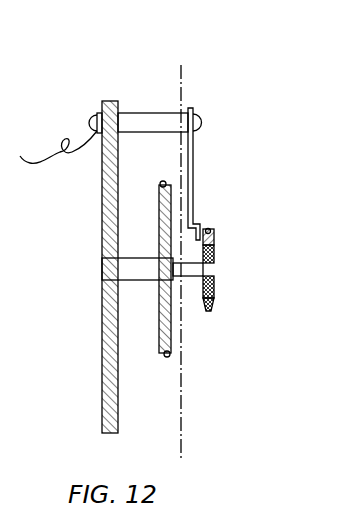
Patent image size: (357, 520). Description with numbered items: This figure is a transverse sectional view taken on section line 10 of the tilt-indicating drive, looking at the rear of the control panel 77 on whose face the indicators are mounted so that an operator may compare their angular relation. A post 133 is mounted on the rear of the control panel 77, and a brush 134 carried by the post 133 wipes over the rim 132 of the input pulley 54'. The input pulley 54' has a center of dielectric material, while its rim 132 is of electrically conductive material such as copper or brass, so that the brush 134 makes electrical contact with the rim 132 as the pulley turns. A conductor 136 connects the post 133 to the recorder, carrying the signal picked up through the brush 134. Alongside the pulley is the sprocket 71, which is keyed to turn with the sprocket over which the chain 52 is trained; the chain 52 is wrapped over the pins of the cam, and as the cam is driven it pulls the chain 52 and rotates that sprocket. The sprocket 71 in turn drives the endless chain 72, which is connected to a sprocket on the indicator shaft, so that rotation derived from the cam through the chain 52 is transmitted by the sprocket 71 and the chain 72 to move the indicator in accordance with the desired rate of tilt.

The section line 10 is at (181, 68).
The control panel 77 is at (104, 392).
The conductor 136 is at (68, 150).
The post 133 is at (138, 118).
The brush 134 is at (194, 158).
The sprocket 71 is at (161, 340).
The endless chain 72 is at (164, 182).
The chain 52 is at (210, 232).
The input pulley 54' is at (243, 271).
The rim 132 is at (214, 304).